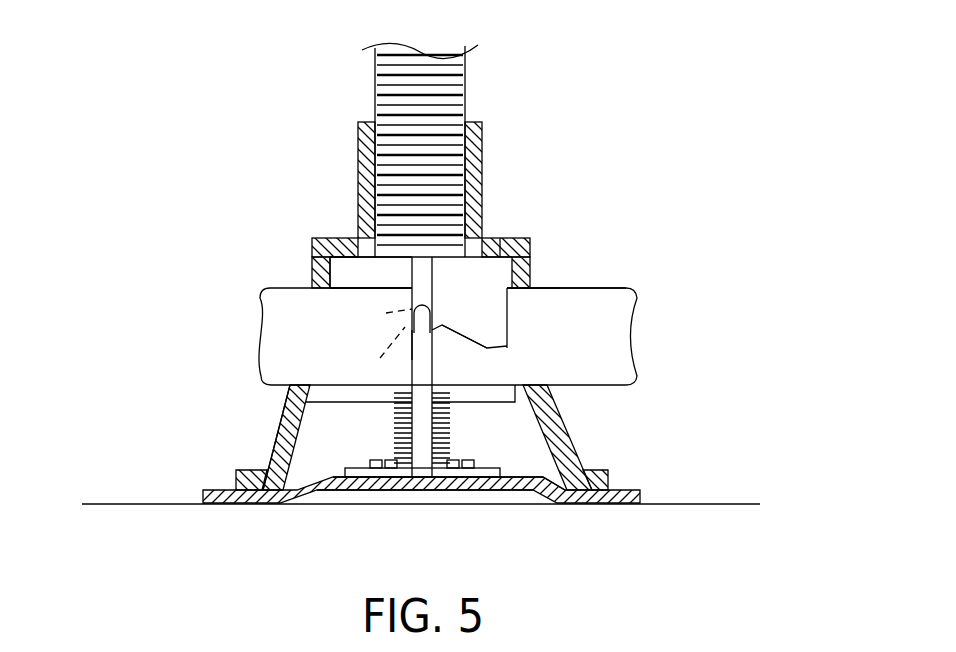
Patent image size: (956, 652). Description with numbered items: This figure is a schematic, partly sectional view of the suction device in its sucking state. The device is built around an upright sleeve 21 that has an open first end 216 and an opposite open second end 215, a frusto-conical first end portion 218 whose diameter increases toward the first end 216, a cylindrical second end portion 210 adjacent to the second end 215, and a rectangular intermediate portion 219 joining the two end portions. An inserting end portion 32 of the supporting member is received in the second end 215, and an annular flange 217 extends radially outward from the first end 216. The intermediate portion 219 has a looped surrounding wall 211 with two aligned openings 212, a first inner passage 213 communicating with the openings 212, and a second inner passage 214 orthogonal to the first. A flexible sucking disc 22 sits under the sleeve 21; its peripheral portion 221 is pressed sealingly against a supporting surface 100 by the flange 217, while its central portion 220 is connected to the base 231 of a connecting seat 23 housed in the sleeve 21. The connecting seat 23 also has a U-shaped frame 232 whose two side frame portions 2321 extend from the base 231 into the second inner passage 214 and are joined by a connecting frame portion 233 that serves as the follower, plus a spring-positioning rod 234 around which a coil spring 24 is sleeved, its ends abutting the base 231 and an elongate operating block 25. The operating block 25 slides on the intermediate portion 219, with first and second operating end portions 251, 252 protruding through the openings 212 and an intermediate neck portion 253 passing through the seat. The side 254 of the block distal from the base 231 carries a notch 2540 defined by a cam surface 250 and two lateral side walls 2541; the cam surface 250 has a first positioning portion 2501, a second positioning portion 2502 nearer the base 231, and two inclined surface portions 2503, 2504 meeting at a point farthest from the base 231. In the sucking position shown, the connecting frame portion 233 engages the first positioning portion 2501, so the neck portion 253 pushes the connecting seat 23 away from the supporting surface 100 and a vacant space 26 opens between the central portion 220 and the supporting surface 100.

The inserting end portion 32 is at (440, 78).
The second end 215 is at (468, 125).
The second end portion 210 is at (420, 158).
The first inner passage 213 is at (444, 288).
The intermediate portion 219 is at (318, 264).
The cam surface 250 is at (458, 329).
The notch 2540 is at (521, 261).
The looped surrounding wall 211 is at (541, 237).
The second inner passage 214 is at (412, 278).
The inclined surface portion 2503 is at (438, 315).
The openings 212 is at (521, 298).
The side 254 is at (611, 288).
The first operating end portion 251 is at (280, 338).
The lateral side walls 2541 is at (408, 298).
The connecting frame portion 233 is at (395, 318).
The first positioning portion 2501 is at (411, 340).
The inclined surface portion 2504 is at (470, 342).
The operating block 25 is at (439, 292).
The second positioning portion 2502 is at (505, 352).
The second operating end portion 252 is at (620, 350).
The U-shaped frame 232 is at (297, 392).
The coil spring 24 is at (405, 432).
The intermediate neck portion 253 is at (462, 366).
The sleeve 21 is at (412, 461).
The first end portion 218 is at (276, 443).
The spring-positioning rod 234 is at (405, 455).
The base 231 is at (497, 468).
The connecting seat 23 is at (512, 466).
The annular flange 217 is at (237, 478).
The flexible sucking disc 22 is at (460, 499).
The supporting surface 100 is at (738, 503).
The central portion 220 is at (370, 484).
The side frame portions 2321 is at (425, 462).
The vacant space 26 is at (455, 497).
The first end 216 is at (549, 494).
The peripheral portion 221 is at (600, 497).